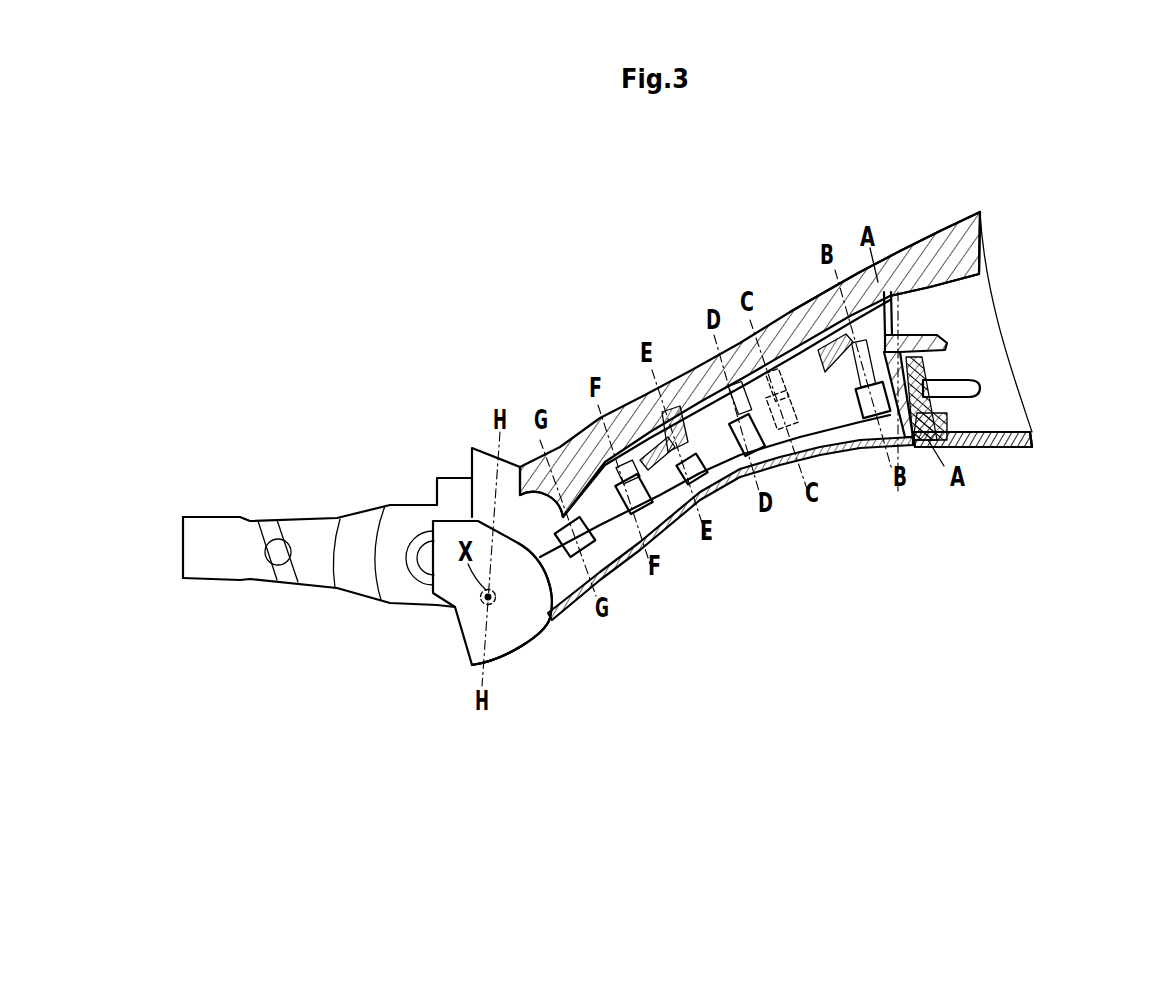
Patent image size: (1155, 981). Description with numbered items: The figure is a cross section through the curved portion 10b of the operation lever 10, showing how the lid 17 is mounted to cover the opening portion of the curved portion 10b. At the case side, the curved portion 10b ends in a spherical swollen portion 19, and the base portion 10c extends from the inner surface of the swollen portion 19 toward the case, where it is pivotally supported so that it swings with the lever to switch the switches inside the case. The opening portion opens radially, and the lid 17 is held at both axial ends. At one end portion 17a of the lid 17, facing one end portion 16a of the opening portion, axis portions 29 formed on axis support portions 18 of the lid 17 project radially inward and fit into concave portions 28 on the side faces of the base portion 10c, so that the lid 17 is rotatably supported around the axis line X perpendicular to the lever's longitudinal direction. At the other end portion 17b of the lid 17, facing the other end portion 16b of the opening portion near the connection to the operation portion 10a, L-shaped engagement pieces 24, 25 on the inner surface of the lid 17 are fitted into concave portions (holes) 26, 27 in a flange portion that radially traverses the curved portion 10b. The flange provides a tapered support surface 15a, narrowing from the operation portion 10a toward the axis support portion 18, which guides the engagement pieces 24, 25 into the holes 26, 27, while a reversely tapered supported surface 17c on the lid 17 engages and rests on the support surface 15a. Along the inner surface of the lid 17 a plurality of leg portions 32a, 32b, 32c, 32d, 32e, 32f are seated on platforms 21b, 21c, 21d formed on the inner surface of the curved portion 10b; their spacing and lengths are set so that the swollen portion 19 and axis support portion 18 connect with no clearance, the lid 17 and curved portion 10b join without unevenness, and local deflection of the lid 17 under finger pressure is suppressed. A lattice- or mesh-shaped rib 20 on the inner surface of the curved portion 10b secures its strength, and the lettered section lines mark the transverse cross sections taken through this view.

The operation lever 10 is at (1013, 213).
The operation portion 10a is at (948, 237).
The curved portion 10b is at (643, 393).
The base portion 10c is at (313, 530).
The support surface 15a is at (913, 413).
The one end portion of the opening portion 16a is at (447, 682).
The other end portion of the opening portion 16b is at (1020, 456).
The lid 17 is at (728, 522).
The one end portion of the lid 17a is at (470, 668).
The other end portion of the lid 17b is at (975, 450).
The supported surface 17c is at (955, 428).
The axis support portion 18 is at (512, 583).
The spherical swollen portion 19 is at (478, 445).
The rib 20 is at (785, 345).
The platform 21b is at (650, 455).
The platform 21c is at (672, 412).
The platform 21d is at (832, 345).
The engagement piece 24 is at (950, 333).
The engagement piece 25 is at (977, 388).
The concave portion (hole) 26 is at (900, 325).
The concave portion (hole) 27 is at (923, 372).
The concave portion 28 is at (470, 612).
The axis portion 29 is at (470, 596).
The leg portion (support portion) 32a is at (594, 540).
The leg portion (support portion) 32b is at (650, 495).
The leg portion (support portion) 32c is at (727, 457).
The leg portion (support portion) 32d is at (755, 470).
The leg portion (support portion) 32e is at (795, 447).
The leg portion (support portion) 32f is at (870, 420).